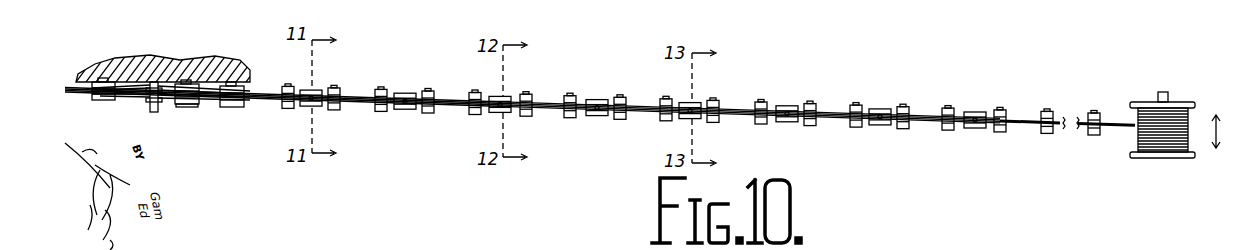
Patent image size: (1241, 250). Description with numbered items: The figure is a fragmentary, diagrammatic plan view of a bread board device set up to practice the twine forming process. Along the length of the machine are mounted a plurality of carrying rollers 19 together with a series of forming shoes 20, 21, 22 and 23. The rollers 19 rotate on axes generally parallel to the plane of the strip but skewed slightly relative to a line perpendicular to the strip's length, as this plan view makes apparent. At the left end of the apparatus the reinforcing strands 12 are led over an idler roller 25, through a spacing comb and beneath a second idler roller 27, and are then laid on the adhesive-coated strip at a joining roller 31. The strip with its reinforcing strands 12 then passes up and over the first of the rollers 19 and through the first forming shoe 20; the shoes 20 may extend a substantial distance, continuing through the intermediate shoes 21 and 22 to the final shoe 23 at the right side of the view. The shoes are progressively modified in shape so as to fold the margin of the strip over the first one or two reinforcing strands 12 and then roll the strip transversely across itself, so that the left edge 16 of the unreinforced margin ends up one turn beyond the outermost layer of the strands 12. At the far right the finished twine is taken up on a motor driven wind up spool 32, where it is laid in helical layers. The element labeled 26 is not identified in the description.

The reinforcing strands 12 is at (201, 103).
The left edge 16 is at (641, 96).
The carrying rollers 19 is at (292, 87).
The forming shoes 20 is at (320, 88).
The intermediate shoe 21 is at (502, 96).
The intermediate shoe 22 is at (693, 102).
The final shoe 23 is at (973, 110).
The idler roller 25 is at (110, 101).
The hub 26 is at (152, 112).
The idler roller 27 is at (179, 107).
The joining roller 31 is at (237, 107).
The wind up spool 32 is at (1144, 158).